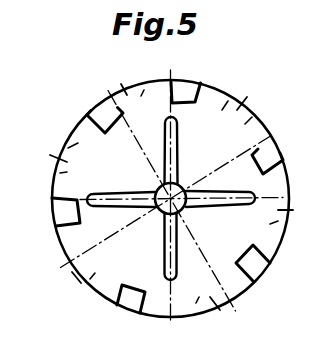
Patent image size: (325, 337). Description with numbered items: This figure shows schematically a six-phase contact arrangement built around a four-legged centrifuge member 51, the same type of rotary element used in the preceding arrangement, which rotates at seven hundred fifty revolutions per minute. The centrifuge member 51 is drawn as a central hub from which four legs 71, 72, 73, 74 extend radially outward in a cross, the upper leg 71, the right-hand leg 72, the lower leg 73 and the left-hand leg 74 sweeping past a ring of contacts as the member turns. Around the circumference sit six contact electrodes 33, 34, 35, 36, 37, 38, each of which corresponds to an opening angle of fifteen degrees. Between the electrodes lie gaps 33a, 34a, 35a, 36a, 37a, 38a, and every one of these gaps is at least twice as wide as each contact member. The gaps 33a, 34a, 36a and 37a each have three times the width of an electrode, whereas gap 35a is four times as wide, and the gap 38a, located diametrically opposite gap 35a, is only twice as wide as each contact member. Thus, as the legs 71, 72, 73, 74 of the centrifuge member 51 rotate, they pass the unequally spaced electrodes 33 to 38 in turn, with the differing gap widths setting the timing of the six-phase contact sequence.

The contact electrode 33 is at (185, 88).
The gap 33a is at (261, 96).
The contact electrode 34 is at (283, 159).
The gap 34a is at (301, 211).
The contact electrode 35 is at (268, 265).
The gap 35a is at (213, 306).
The contact electrode 36 is at (124, 303).
The gap 36a is at (75, 276).
The contact electrode 37 is at (55, 224).
The gap 37a is at (60, 158).
The contact electrode 38 is at (100, 112).
The gap 38a is at (122, 78).
The four-legged centrifuge member 51 is at (160, 214).
The contact arm 71 is at (165, 137).
The contact arm 72 is at (235, 195).
The contact arm 73 is at (177, 266).
The contact arm 74 is at (109, 204).